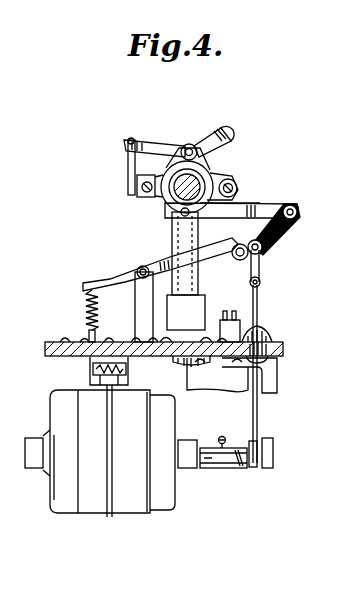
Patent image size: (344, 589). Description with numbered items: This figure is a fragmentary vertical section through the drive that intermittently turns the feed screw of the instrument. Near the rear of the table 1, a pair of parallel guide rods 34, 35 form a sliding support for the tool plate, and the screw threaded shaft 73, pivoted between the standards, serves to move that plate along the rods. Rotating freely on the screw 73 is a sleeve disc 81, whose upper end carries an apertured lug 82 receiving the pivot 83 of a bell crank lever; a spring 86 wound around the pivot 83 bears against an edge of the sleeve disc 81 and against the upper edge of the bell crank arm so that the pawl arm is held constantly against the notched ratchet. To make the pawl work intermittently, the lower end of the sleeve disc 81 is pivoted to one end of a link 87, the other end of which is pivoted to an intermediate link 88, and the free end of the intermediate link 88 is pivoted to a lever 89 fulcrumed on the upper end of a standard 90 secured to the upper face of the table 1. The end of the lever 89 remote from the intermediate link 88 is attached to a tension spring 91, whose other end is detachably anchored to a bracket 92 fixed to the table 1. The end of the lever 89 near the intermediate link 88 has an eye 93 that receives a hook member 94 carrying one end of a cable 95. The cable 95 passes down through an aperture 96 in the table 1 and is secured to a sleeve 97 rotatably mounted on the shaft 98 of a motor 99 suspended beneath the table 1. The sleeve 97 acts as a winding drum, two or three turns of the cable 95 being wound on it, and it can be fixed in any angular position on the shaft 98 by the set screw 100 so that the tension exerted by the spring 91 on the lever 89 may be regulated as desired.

The table 1 is at (47, 342).
The guide rod 34 is at (263, 170).
The guide rod 35 is at (136, 188).
The screw threaded shaft 73 is at (214, 178).
The sleeve disc 81 is at (165, 210).
The apertured lug 82 is at (184, 149).
The pivot 83 is at (190, 144).
The spring 86 is at (214, 132).
The link 87 is at (263, 203).
The intermediate link 88 is at (285, 226).
The lever 89 is at (232, 246).
The standard 90 is at (136, 313).
The tension spring 91 is at (86, 301).
The bracket 92 is at (88, 336).
The eye 93 is at (263, 251).
The hook member 94 is at (261, 279).
The cable 95 is at (259, 318).
The aperture 96 is at (284, 352).
The sleeve 97 is at (274, 449).
The shaft 98 is at (212, 462).
The motor 99 is at (58, 410).
The set screw 100 is at (219, 434).